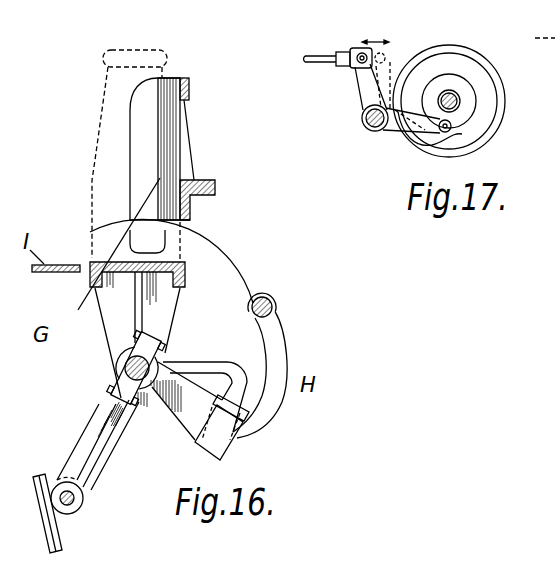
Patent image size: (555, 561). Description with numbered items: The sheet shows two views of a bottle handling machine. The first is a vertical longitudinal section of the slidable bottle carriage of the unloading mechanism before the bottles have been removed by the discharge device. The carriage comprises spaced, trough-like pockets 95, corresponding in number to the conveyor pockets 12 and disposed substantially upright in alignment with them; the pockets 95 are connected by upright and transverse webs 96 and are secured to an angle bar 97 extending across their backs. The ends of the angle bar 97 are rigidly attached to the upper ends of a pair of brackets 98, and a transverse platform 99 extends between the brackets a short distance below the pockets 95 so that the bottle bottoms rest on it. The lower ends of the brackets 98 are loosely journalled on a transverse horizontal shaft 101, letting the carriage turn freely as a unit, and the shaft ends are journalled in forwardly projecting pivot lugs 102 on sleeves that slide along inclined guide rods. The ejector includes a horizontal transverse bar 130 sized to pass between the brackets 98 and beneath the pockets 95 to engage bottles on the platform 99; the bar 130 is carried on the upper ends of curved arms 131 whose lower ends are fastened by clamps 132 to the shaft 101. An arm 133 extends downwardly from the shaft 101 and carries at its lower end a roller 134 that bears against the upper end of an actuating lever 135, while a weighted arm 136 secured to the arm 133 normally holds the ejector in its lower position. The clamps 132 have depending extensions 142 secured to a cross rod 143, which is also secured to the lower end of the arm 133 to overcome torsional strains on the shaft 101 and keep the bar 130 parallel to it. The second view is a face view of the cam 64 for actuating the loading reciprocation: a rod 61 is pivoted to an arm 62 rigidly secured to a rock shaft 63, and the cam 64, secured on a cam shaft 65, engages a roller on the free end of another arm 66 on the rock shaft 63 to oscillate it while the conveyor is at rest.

In FIG. 16, the pivot lugs 102 is at (120, 6).
In FIG. 16, the trough-like pockets 95 is at (162, 114).
In FIG. 16, the webs 96 is at (190, 86).
In FIG. 16, the angle bar 97 is at (193, 210).
In FIG. 16, the brackets 98 is at (83, 240).
In FIG. 16, the transverse platform 99 is at (128, 288).
In FIG. 16, the transverse horizontal shaft 101 is at (168, 360).
In FIG. 16, the horizontal transverse bar 130 is at (270, 300).
In FIG. 16, the curved arms 131 is at (280, 357).
In FIG. 16, the clamps 132 is at (115, 363).
In FIG. 16, the arm 133 is at (122, 425).
In FIG. 16, the roller 134 is at (86, 499).
In FIG. 16, the actuating lever 135 is at (60, 537).
In FIG. 16, the weighted arm 136 is at (225, 367).
In FIG. 16, the depending extensions 142 is at (98, 457).
In FIG. 16, the cross rod 143 is at (57, 481).
In FIG. 17, the rod 61 is at (328, 53).
In FIG. 17, the arm 62 is at (360, 88).
In FIG. 17, the rock shaft 63 is at (368, 130).
In FIG. 17, the cam 64 is at (468, 70).
In FIG. 17, the cam shaft 65 is at (457, 101).
In FIG. 17, the arm 66 is at (404, 132).
In FIG. 17, the pockets 12 is at (550, 101).